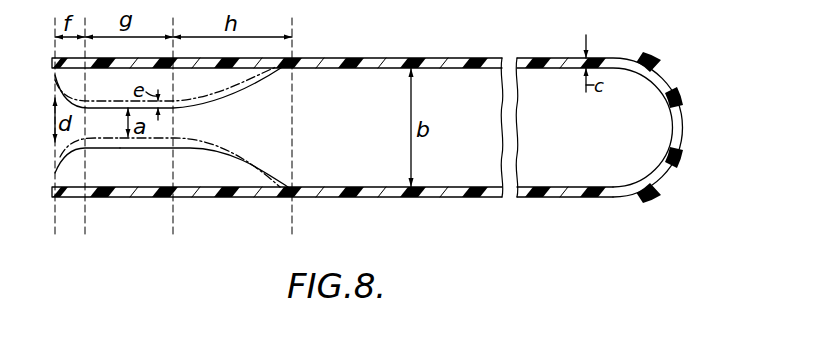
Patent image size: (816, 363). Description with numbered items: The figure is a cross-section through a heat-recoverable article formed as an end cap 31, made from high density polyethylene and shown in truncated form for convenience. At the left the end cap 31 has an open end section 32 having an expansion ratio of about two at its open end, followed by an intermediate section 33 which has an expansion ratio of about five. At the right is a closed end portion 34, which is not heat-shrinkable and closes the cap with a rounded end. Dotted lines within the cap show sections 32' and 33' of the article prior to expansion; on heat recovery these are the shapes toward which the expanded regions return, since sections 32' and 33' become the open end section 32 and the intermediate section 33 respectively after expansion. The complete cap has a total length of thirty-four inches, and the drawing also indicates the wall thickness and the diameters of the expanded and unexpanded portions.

The end cap 31 is at (352, 58).
The closed end portion 34 is at (338, 197).
The open end section 32 is at (87, 216).
The open end section prior to expansion 32' is at (82, 201).
The intermediate section 33 is at (204, 206).
The intermediate section prior to expansion 33' is at (196, 187).